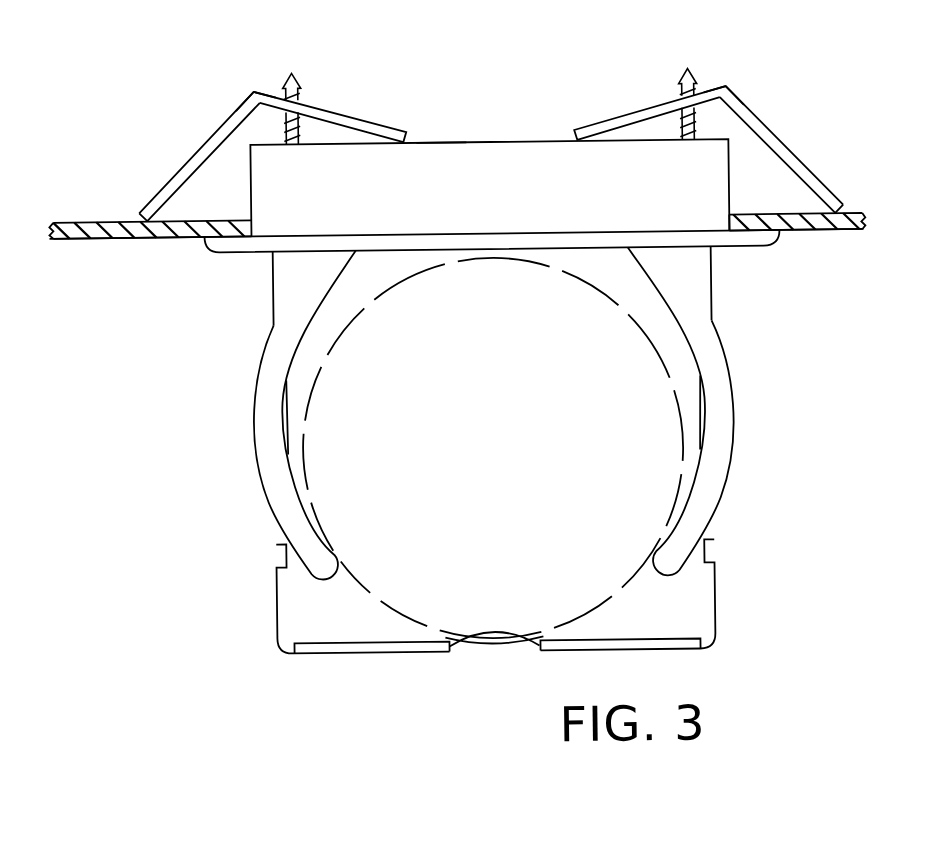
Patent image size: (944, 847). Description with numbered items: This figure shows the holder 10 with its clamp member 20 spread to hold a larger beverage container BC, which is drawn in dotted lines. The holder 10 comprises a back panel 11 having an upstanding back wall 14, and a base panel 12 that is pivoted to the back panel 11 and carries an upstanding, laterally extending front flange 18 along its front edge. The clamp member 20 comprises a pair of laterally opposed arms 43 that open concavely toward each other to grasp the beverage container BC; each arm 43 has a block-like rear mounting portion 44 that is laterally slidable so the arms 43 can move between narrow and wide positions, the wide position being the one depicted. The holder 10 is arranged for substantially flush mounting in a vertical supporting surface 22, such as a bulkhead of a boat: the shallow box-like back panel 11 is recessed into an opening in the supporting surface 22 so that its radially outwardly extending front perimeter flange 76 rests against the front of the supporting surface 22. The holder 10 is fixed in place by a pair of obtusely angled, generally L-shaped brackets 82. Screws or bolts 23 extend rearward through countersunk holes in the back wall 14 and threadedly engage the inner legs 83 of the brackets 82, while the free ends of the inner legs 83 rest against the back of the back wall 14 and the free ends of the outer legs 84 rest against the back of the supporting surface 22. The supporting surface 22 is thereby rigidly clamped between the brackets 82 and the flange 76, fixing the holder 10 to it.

The holder 10 is at (479, 80).
The back panel 11 is at (446, 141).
The base panel 12 is at (291, 653).
The back wall 14 is at (529, 141).
The front flange 18 is at (352, 652).
The clamp member 20 is at (505, 489).
The supporting surface 22 is at (90, 222).
The screws or bolts 23 is at (300, 76).
The arm 43 is at (262, 465).
The rear mounting portion 44 is at (278, 283).
The front perimeter flange 76 is at (212, 242).
The L-shaped bracket 82 is at (260, 88).
The inner leg 83 is at (633, 113).
The outer leg 84 is at (195, 160).
The beverage container BC is at (303, 426).